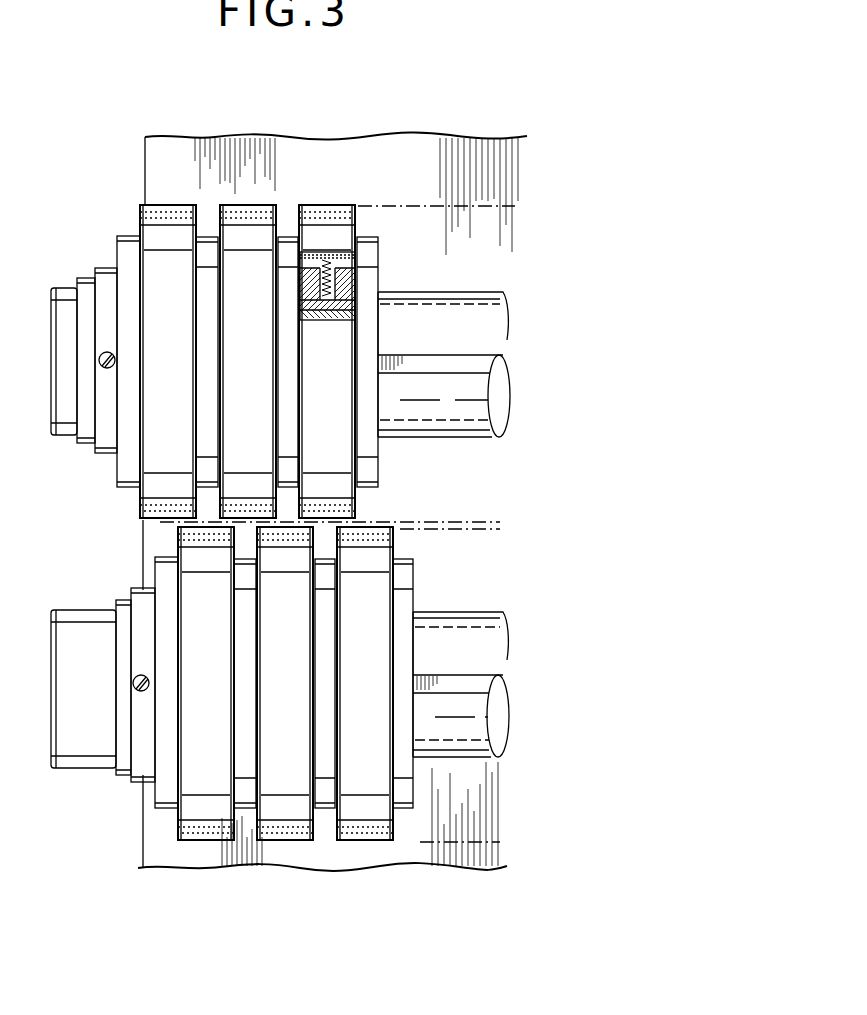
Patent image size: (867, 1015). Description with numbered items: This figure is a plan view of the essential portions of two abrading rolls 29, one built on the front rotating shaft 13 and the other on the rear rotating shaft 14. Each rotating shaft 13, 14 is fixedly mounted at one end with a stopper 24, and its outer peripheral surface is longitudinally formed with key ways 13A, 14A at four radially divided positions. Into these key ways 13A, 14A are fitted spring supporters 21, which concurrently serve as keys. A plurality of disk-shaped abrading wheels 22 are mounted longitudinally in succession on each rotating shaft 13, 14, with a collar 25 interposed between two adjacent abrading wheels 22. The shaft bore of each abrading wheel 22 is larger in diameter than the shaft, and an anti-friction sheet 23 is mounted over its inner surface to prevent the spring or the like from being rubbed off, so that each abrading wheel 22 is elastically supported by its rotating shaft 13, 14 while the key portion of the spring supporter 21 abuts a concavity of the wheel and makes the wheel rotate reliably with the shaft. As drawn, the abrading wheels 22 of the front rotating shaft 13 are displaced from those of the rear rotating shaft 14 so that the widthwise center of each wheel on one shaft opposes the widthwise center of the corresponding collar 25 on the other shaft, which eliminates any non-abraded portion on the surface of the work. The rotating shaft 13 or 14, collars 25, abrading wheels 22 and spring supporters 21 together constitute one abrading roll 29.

The rotating shaft 13 is at (503, 332).
The key way 13A is at (482, 303).
The rotating shaft 14 is at (500, 658).
The key way 14A is at (463, 627).
The spring supporter 21 is at (355, 260).
The abrading wheel 22 is at (166, 205).
The anti-friction sheet 23 is at (342, 248).
The stopper 24 is at (100, 267).
The collar 25 is at (128, 235).
The abrading roll 29 is at (100, 470).